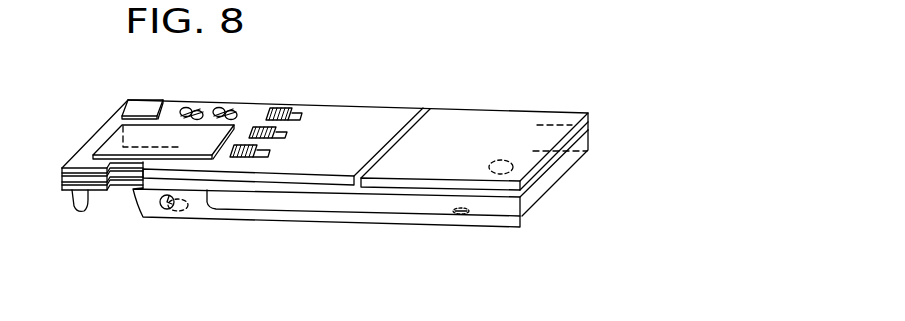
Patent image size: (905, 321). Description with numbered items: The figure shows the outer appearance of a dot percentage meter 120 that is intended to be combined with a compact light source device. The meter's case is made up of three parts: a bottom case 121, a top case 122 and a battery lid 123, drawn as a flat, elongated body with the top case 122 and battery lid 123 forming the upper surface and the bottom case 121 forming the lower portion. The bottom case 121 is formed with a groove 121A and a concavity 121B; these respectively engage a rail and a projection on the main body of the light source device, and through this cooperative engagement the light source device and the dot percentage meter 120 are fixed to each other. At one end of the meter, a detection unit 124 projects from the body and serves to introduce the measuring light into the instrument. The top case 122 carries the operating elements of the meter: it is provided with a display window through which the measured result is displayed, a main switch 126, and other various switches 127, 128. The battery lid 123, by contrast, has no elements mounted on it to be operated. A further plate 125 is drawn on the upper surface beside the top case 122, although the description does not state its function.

The dot percentage meter 120 is at (128, 274).
The bottom case 121 is at (270, 216).
The groove 121A is at (588, 140).
The concavity 121B is at (168, 210).
The top case 122 is at (362, 114).
The battery lid 123 is at (500, 118).
The detection unit 124 is at (76, 206).
The mounting plate 125 is at (107, 143).
The main switch 126 is at (143, 98).
The switches 127 is at (219, 107).
The switches 128 is at (239, 145).